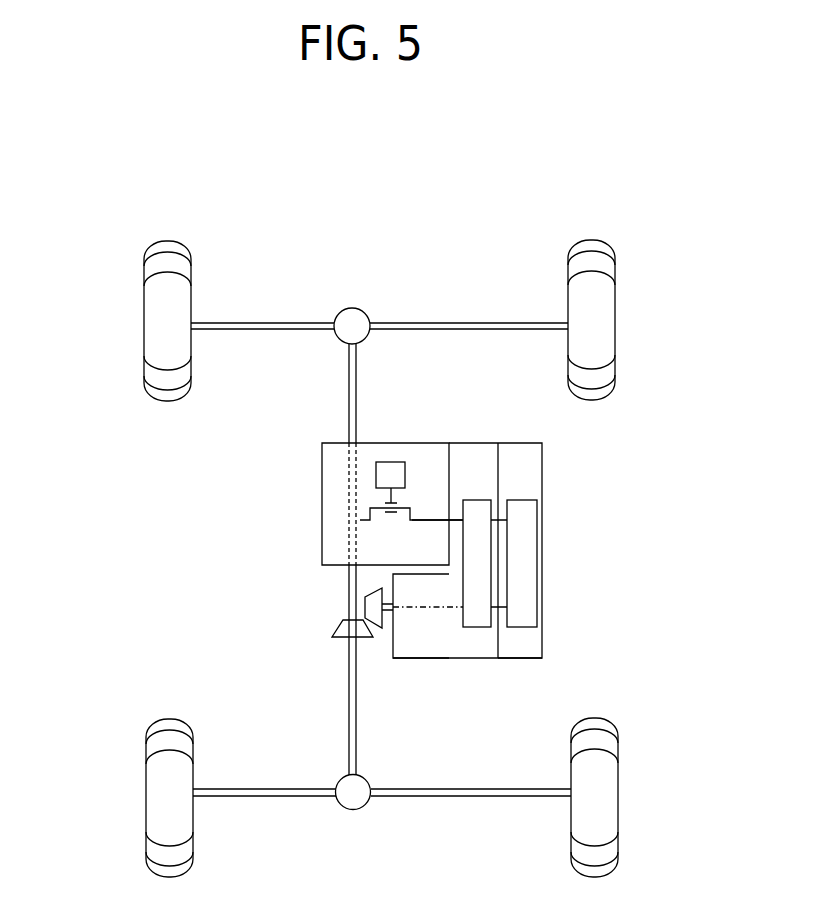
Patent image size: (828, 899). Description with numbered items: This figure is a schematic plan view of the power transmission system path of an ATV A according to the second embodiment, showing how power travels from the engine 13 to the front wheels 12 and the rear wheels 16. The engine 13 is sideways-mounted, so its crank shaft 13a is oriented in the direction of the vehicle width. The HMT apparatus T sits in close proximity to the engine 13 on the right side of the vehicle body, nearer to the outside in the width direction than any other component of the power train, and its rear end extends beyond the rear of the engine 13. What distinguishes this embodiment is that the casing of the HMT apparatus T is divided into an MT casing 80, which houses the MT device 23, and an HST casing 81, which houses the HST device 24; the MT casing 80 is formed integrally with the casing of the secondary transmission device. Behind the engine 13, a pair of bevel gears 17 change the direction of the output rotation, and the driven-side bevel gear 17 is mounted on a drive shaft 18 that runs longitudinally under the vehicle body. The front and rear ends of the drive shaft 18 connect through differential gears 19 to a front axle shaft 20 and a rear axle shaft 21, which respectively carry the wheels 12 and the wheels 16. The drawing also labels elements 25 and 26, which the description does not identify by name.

The wheels 12 is at (145, 292).
The wheels 16 is at (146, 787).
The differential gears 19 is at (352, 307).
The front axle shaft 20 is at (445, 320).
The rear axle shaft 21 is at (448, 798).
The drive shaft 18 is at (349, 698).
The engine 13 is at (402, 443).
The crank shaft 13a is at (363, 518).
The HMT apparatus T is at (496, 422).
The input shaft 25 is at (457, 520).
The MT device 23 is at (480, 500).
The HST device 24 is at (520, 500).
The bevel gears 17 is at (365, 600).
The output shaft 26 is at (447, 608).
The MT casing 80 is at (403, 660).
The HST casing 81 is at (527, 660).
The ATV A is at (96, 539).